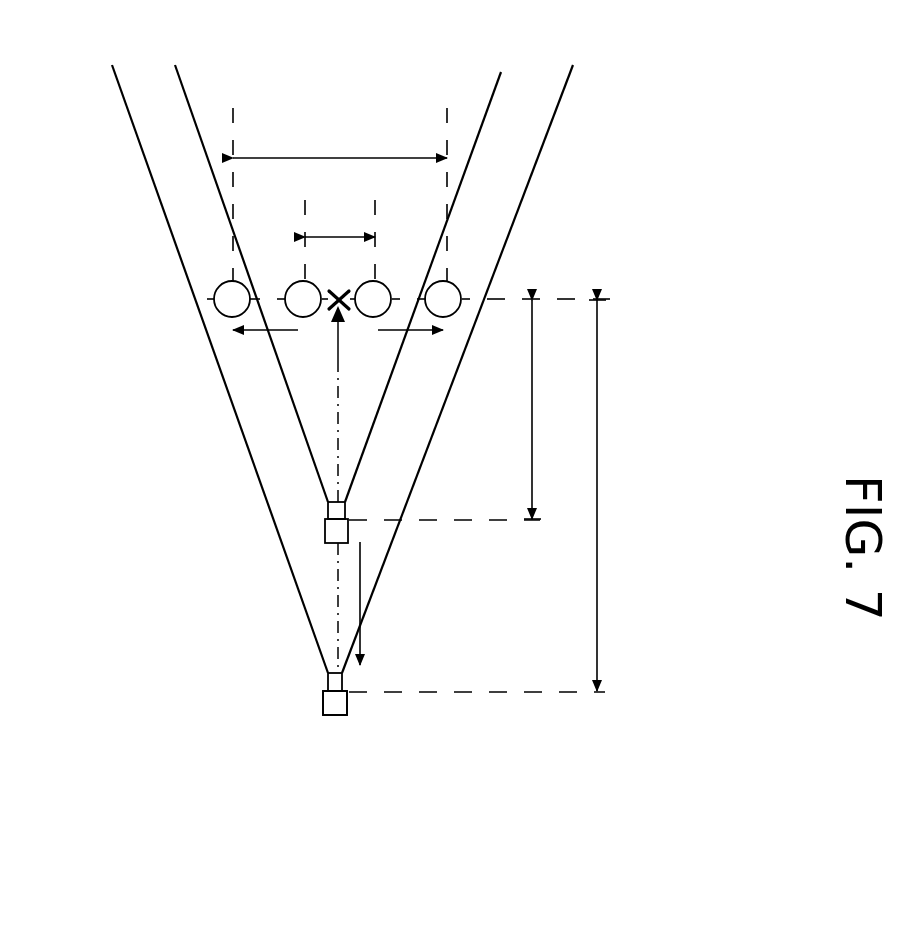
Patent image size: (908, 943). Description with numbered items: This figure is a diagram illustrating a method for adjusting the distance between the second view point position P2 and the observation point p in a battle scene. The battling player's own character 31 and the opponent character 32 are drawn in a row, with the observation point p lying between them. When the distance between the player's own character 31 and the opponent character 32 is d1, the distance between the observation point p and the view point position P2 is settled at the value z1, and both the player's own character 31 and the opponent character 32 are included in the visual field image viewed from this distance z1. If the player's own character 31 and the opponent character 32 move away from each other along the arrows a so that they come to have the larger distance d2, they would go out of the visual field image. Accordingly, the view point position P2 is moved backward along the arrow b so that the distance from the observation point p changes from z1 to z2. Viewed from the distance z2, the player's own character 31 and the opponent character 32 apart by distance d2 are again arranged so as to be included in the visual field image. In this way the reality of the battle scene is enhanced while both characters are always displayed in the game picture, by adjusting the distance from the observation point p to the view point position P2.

The player's own character 31 is at (303, 281).
The opponent character 32 is at (432, 282).
The second view point position P2 is at (322, 689).
The observation point p is at (333, 259).
The arrow a is at (338, 344).
The arrow b is at (368, 603).
The distance d1 is at (340, 223).
The distance d2 is at (340, 145).
The distance z1 is at (541, 409).
The distance z2 is at (606, 495).